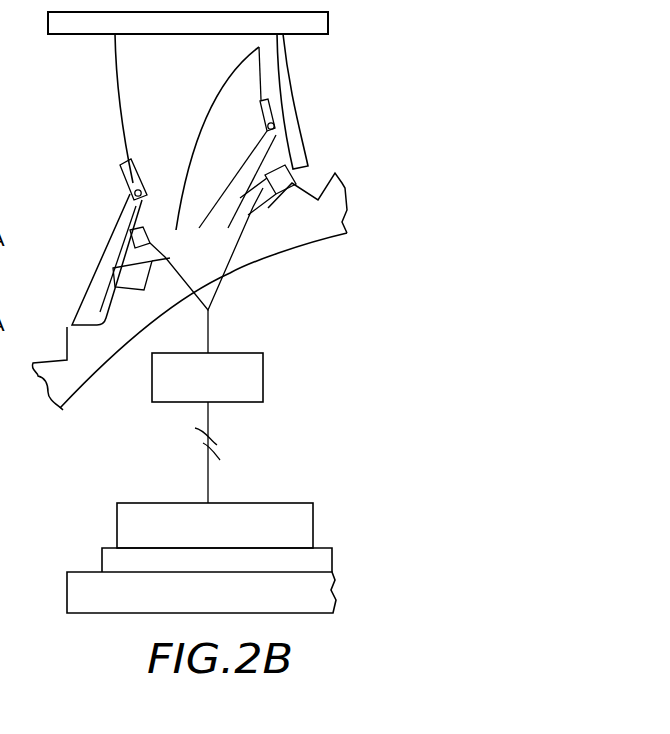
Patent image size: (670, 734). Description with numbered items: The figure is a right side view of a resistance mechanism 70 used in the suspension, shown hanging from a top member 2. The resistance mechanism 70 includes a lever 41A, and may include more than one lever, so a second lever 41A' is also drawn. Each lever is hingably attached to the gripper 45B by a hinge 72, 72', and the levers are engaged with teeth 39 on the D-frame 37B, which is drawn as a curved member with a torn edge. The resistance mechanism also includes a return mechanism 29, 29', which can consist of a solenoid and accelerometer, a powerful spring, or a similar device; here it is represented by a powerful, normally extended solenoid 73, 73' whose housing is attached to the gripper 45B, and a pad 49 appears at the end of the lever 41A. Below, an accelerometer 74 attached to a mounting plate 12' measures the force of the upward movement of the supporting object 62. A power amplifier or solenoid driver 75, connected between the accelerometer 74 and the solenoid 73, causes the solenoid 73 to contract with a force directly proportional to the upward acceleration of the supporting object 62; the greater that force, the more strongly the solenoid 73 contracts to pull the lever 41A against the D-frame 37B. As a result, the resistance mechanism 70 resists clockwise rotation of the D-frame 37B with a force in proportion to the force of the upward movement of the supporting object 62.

The support bar 2 is at (60, 23).
The gripper 45B is at (140, 78).
The return mechanism 29 is at (111, 168).
The hinge 72 is at (106, 179).
The lever 41A is at (102, 256).
The resistance mechanism 70 is at (101, 253).
The solenoid 73 is at (106, 233).
The pad 49 is at (100, 270).
The teeth 39 is at (62, 328).
The D-frame 37B is at (68, 396).
The power amplifier or solenoid driver 75 is at (170, 404).
The accelerometer 74 is at (124, 484).
The mounting plate 12' is at (191, 524).
The supporting object 62 is at (87, 583).
The lever 41A' is at (226, 138).
The hinge 72' is at (315, 99).
The return mechanism 29' is at (322, 126).
The solenoid 73' is at (305, 172).